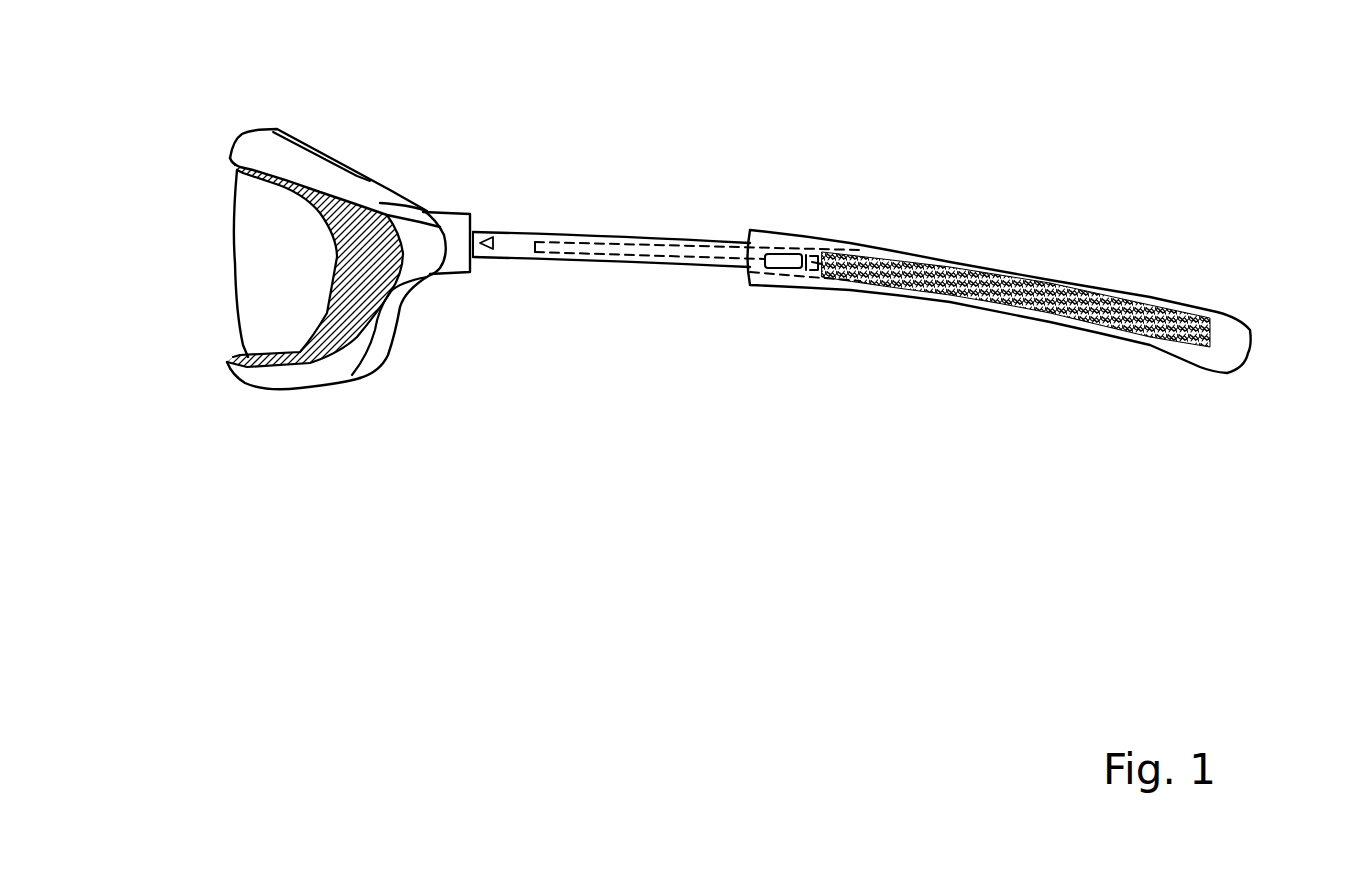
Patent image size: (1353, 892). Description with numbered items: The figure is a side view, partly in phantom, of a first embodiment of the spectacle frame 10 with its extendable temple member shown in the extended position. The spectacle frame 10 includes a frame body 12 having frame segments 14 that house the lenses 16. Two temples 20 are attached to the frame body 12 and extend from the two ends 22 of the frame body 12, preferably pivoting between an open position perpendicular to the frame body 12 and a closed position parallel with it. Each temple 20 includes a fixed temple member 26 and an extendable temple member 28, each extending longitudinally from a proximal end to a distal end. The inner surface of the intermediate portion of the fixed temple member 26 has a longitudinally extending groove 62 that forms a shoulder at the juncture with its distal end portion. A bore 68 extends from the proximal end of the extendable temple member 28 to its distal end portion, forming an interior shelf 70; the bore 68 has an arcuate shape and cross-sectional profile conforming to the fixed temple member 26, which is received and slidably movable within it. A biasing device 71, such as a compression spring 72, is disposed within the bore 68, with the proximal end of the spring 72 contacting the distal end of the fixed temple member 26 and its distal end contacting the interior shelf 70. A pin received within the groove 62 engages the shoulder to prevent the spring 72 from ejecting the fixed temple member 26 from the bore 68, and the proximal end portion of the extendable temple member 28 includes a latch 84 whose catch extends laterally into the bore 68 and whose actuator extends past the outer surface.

The spectacle frame 10 is at (714, 99).
The frame body 12 is at (250, 128).
The frame segment 14 is at (272, 393).
The lens 16 is at (236, 257).
The temple 20 is at (753, 410).
The end of the frame body 22 is at (425, 211).
The fixed temple member 26 is at (513, 270).
The extendable temple member 28 is at (1040, 282).
The groove 62 is at (630, 247).
The bore 68 is at (1160, 306).
The interior shelf 70 is at (1215, 334).
The biasing device 71 is at (940, 270).
The compression spring 72 is at (958, 300).
The latch 84 is at (815, 255).